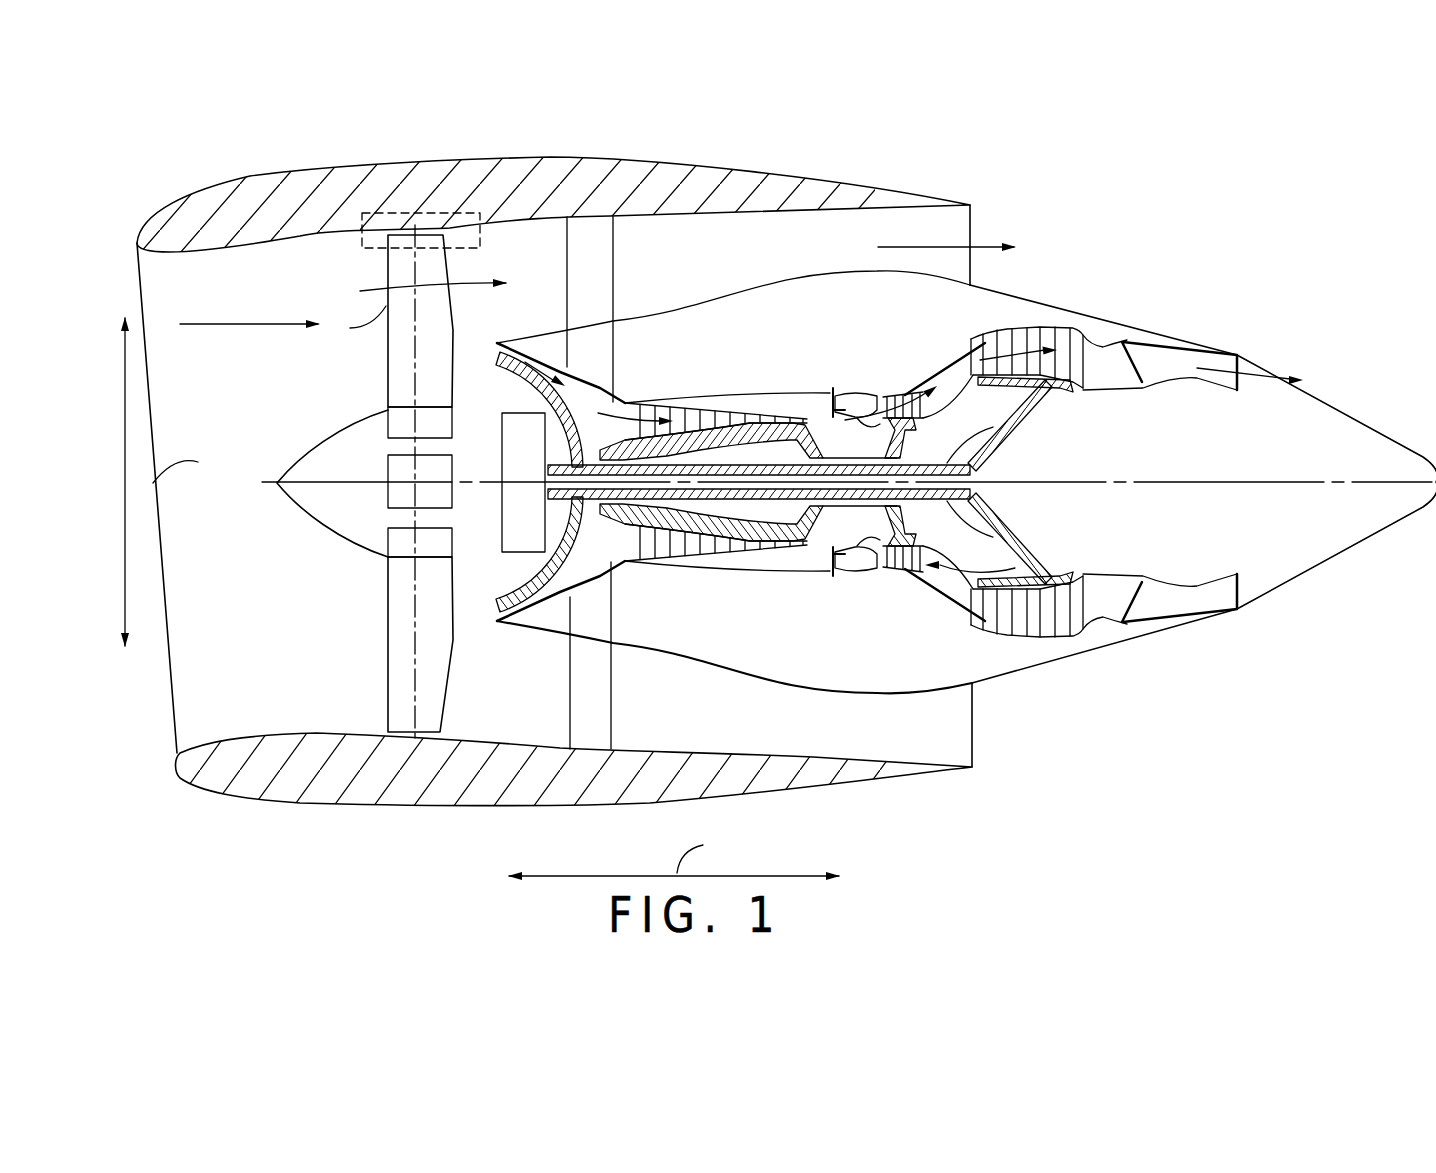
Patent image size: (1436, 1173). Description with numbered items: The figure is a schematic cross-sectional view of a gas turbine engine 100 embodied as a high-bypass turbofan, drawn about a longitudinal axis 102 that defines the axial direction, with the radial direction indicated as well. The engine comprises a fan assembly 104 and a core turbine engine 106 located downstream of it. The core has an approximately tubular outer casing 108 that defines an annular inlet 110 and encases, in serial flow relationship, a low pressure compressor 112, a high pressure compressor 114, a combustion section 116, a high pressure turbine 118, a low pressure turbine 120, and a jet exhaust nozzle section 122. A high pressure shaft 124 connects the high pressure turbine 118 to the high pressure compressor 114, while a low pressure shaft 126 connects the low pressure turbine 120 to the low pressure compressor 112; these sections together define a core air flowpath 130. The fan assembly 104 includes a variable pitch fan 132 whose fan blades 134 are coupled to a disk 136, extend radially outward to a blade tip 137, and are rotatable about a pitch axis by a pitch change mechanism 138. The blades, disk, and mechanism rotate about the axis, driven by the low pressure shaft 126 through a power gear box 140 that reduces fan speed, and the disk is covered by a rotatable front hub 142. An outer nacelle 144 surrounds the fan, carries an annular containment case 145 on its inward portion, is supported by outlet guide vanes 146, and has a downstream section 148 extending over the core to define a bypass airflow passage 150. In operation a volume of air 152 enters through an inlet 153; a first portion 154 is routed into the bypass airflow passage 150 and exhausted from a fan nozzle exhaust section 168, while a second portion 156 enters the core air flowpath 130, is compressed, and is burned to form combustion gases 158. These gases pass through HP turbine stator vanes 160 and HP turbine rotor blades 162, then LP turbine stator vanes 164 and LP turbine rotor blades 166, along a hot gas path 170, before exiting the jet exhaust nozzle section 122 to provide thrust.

The gas turbine engine 100 is at (1151, 182).
The longitudinal axis 102 is at (1173, 470).
The fan assembly 104 is at (287, 264).
The core turbine engine 106 is at (750, 358).
The outer casing 108 is at (802, 680).
The annular inlet 110 is at (492, 615).
The low pressure compressor 112 is at (543, 622).
The high pressure compressor 114 is at (650, 570).
The combustion section 116 is at (848, 570).
The high pressure turbine 118 is at (971, 567).
The low pressure turbine 120 is at (1080, 650).
The jet exhaust nozzle section 122 is at (1145, 624).
The high pressure shaft 124 is at (897, 443).
The low pressure shaft 126 is at (997, 455).
The core air flowpath 130 is at (591, 605).
The variable pitch fan 132 is at (330, 543).
The fan blades 134 is at (387, 662).
The disk 136 is at (403, 425).
The blade tip 137 is at (372, 727).
The pitch change mechanism 138 is at (395, 470).
The power gear box 140 is at (590, 393).
The rotatable front hub 142 is at (287, 493).
The outer nacelle 144 is at (437, 810).
The annular containment case 145 is at (430, 212).
The outlet guide vanes 146 is at (611, 265).
The downstream section 148 is at (858, 188).
The bypass airflow passage 150 is at (792, 263).
The volume of air 152 is at (243, 322).
The inlet 153 is at (178, 748).
The first portion 154 is at (407, 283).
The second portion 156 is at (480, 355).
The combustion gases 158 is at (1022, 347).
The HP turbine stator vanes 160 is at (868, 582).
The HP turbine rotor blades 162 is at (885, 574).
The LP turbine stator vanes 164 is at (982, 626).
The LP turbine rotor blades 166 is at (988, 632).
The fan nozzle exhaust section 168 is at (955, 225).
The hot gas path 170 is at (953, 347).